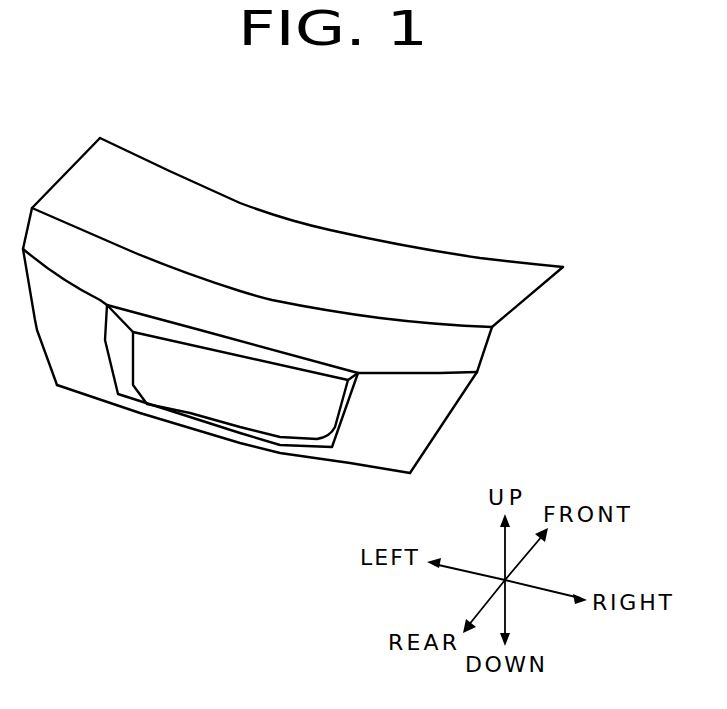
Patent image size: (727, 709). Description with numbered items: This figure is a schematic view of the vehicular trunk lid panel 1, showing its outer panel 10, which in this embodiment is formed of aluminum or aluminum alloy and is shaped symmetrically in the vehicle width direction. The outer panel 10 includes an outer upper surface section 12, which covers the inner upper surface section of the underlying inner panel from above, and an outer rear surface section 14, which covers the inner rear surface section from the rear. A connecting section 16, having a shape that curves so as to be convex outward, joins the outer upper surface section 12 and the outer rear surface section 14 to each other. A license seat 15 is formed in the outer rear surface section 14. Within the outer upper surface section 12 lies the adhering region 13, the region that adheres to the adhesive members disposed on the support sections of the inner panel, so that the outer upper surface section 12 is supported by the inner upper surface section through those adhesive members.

The vehicular trunk lid panel 1 is at (389, 176).
The outer panel 10 is at (596, 300).
The outer upper surface section 12 is at (492, 293).
The adhering region 13 is at (239, 260).
The outer rear surface section 14 is at (430, 413).
The license seat 15 is at (255, 408).
The connecting section 16 is at (462, 348).